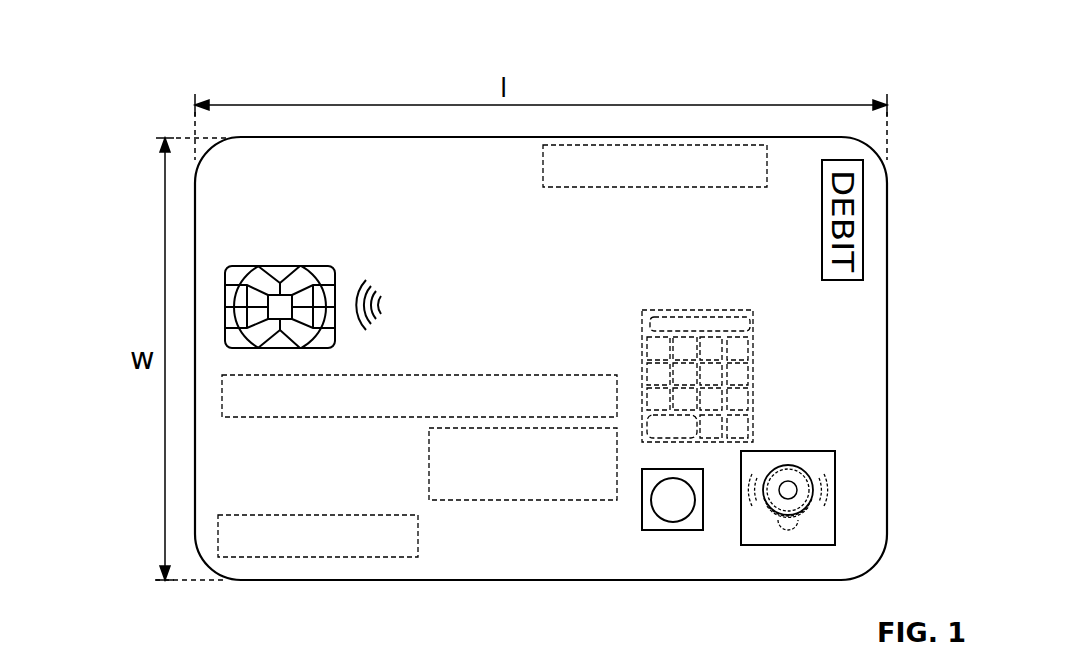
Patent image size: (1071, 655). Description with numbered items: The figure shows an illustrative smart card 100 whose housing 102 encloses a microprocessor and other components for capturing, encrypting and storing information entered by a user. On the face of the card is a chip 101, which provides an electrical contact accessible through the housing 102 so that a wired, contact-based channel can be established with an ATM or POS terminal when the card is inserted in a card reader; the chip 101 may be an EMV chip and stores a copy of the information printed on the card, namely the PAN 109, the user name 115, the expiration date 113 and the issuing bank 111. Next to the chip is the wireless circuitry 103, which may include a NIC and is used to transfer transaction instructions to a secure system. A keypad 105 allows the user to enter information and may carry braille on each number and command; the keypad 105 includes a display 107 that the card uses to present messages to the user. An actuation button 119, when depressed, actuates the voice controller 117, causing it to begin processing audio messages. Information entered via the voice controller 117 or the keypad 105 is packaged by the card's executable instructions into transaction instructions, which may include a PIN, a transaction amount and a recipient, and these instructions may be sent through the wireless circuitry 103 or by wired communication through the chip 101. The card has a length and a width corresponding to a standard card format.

The smart card 100 is at (138, 48).
The chip 101 is at (321, 266).
The housing 102 is at (540, 553).
The wireless circuitry 103 is at (386, 303).
The keypad 105 is at (753, 470).
The display 107 is at (748, 328).
The PAN 109 is at (510, 374).
The issuing bank 111 is at (543, 162).
The expiration date 113 is at (429, 465).
The user name 115 is at (310, 557).
The voice controller 117 is at (780, 545).
The actuation button 119 is at (651, 530).